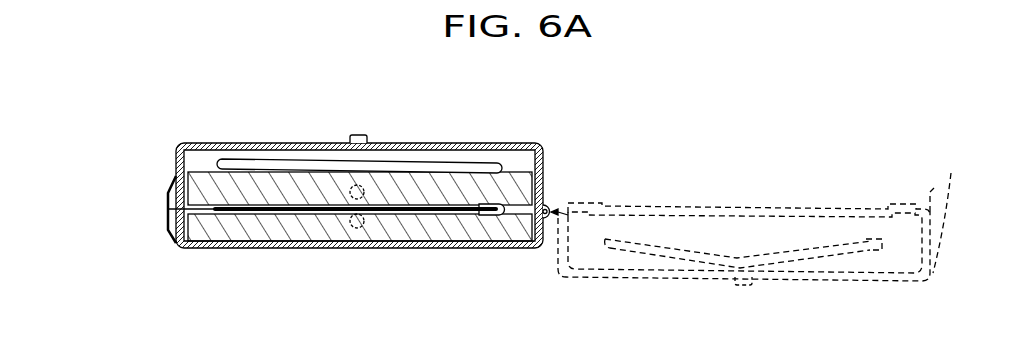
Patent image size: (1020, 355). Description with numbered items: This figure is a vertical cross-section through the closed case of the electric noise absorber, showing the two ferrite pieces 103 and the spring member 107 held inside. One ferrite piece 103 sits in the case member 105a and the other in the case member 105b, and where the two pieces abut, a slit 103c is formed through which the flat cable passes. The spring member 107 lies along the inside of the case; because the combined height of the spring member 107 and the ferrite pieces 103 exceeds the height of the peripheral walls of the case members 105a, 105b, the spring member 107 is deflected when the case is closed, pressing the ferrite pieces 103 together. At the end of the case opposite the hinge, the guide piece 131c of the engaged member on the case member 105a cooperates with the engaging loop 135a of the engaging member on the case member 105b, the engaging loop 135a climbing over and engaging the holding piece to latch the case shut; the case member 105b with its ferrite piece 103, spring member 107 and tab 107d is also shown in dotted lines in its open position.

The ferrite piece 103 is at (445, 232).
The slit 103c is at (403, 211).
The case member 105a is at (218, 248).
The case member 105b is at (515, 143).
The spring member 107 is at (260, 163).
The contact tab 107d is at (367, 138).
The guide piece 131c is at (172, 224).
The engaging loop 135a is at (170, 193).